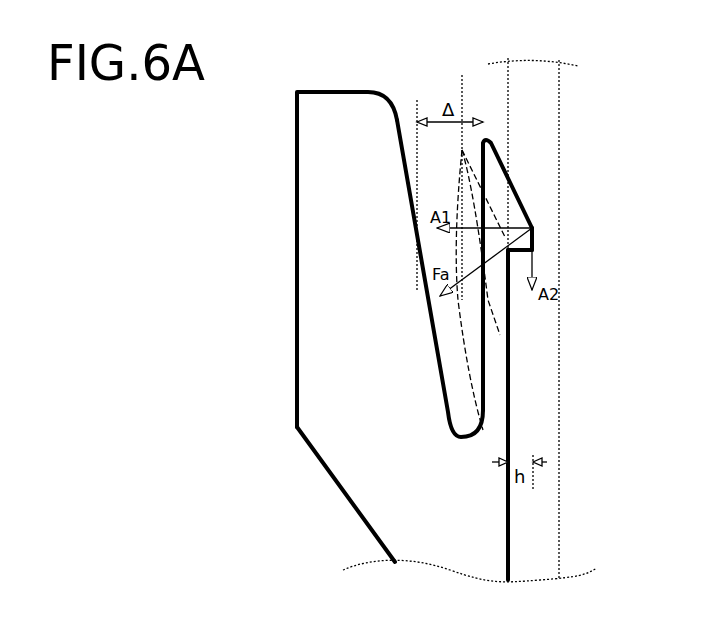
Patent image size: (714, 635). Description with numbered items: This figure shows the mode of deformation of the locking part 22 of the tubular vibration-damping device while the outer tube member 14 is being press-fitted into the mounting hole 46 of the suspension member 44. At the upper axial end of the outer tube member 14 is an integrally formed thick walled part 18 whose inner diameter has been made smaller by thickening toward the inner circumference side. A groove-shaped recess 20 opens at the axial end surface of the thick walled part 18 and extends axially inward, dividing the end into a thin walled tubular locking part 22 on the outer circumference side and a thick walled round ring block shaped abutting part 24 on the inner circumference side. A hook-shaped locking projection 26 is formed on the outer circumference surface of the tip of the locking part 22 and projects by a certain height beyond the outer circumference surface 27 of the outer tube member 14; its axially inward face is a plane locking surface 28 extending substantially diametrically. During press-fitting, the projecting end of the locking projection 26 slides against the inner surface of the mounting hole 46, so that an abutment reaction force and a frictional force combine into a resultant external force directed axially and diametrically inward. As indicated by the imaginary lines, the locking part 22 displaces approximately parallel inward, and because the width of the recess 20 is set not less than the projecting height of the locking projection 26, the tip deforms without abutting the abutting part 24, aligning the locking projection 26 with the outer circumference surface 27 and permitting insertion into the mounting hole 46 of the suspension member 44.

The outer tube member 14 is at (281, 81).
The thick walled part 18 is at (293, 245).
The recess 20 is at (466, 175).
The locking part 22 is at (521, 181).
The abutting part 24 is at (320, 192).
The locking projection 26 is at (520, 220).
The outer circumference surface 27 is at (510, 560).
The locking surface 28 is at (535, 250).
The suspension member 44 is at (545, 548).
The mounting hole 46 is at (512, 105).